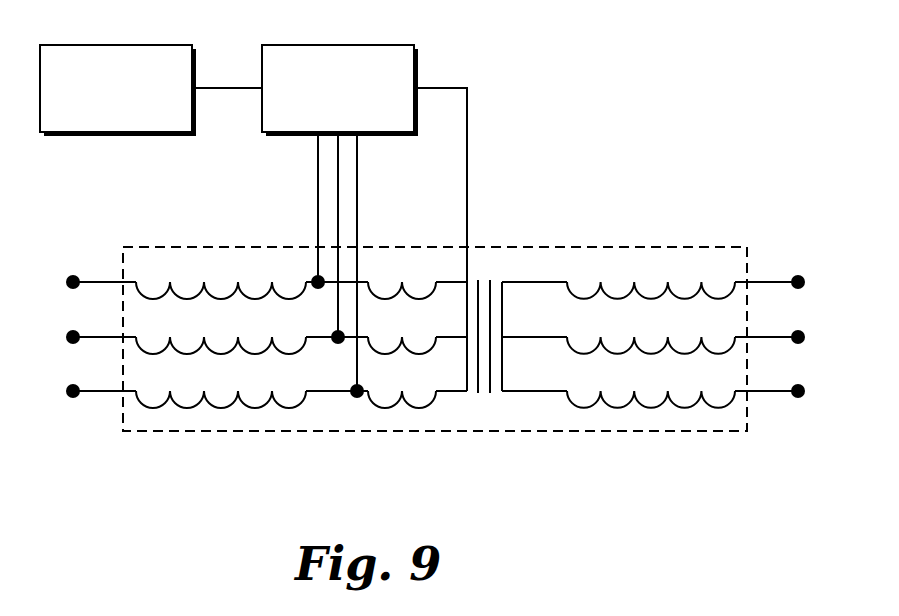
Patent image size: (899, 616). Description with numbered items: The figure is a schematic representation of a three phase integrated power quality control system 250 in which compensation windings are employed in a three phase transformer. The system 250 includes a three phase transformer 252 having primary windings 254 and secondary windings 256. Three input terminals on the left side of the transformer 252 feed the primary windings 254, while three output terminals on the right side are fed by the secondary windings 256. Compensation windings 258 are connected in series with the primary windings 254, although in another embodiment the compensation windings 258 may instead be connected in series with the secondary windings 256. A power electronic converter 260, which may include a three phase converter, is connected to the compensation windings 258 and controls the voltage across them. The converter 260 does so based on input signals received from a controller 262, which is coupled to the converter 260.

The three phase integrated power quality control system 250 is at (660, 58).
The three phase transformer 252 is at (276, 248).
The primary windings 254 is at (187, 387).
The secondary windings 256 is at (622, 385).
The compensation windings 258 is at (390, 302).
The power electronic converter 260 is at (416, 134).
The controller 262 is at (194, 134).